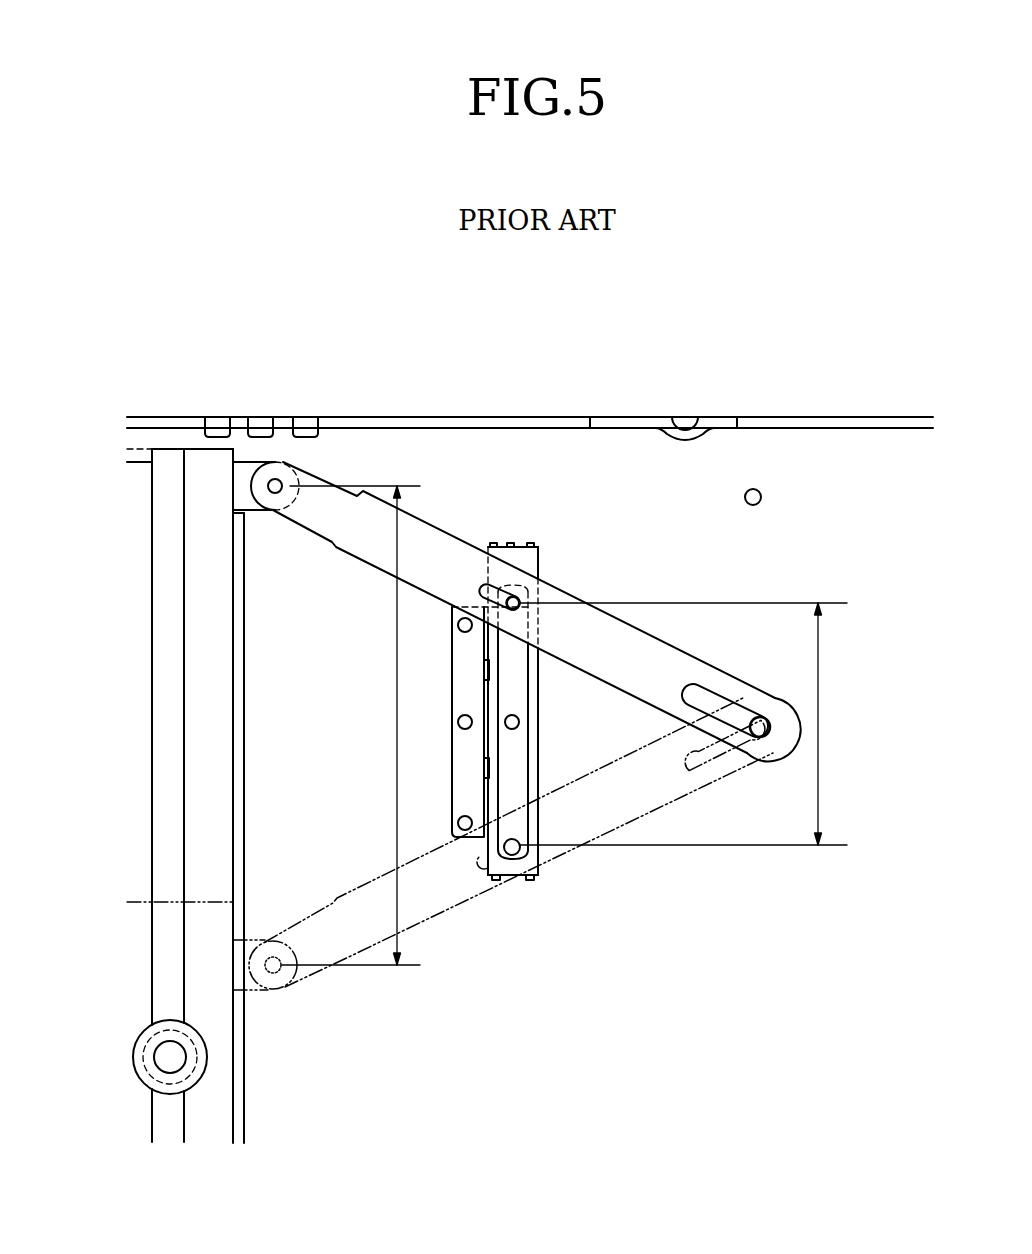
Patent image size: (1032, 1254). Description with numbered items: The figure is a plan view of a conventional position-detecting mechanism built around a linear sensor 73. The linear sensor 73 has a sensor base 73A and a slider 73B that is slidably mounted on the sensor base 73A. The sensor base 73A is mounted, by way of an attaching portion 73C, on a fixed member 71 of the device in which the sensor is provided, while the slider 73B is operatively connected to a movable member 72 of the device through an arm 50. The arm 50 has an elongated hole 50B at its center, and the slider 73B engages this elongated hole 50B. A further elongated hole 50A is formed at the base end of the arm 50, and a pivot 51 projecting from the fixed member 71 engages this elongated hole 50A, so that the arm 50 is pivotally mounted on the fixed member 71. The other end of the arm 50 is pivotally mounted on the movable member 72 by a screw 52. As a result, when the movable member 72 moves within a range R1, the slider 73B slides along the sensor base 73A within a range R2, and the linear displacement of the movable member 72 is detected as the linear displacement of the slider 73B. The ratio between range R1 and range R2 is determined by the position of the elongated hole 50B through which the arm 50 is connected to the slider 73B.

The arm 50 is at (327, 466).
The elongated hole 50A is at (712, 705).
The elongated hole 50B is at (481, 588).
The pivot 51 is at (760, 735).
The screw 52 is at (278, 480).
The fixed member 71 is at (837, 437).
The movable member 72 is at (213, 553).
The linear sensor 73 is at (498, 535).
The sensor base 73A is at (539, 565).
The slider 73B is at (519, 599).
The attaching portion 73C is at (463, 671).
The range R1 is at (351, 725).
The range R2 is at (697, 724).